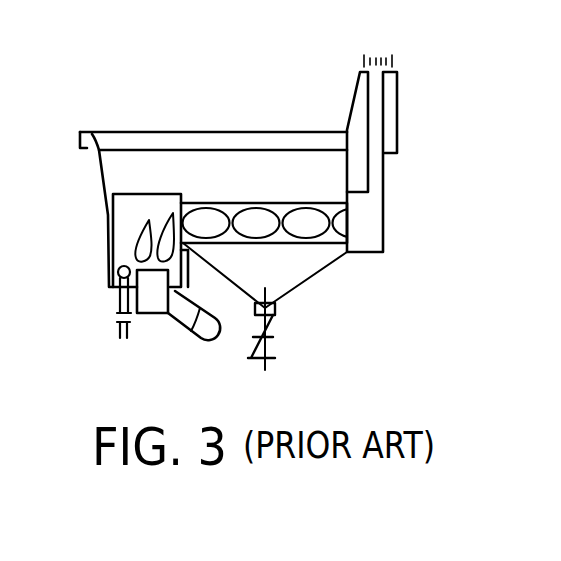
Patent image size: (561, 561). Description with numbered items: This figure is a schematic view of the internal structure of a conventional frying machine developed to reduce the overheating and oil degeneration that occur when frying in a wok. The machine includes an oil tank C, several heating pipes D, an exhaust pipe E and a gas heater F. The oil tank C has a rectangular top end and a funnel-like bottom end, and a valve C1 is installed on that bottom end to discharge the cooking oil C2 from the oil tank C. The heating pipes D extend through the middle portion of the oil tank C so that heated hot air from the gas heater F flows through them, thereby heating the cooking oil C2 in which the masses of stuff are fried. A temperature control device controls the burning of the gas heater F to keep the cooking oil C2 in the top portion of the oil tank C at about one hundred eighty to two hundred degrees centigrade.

The oil tank C is at (138, 125).
The cooking oil C2 is at (198, 153).
The exhaust pipe E is at (375, 138).
The heating pipes D is at (310, 223).
The valve C1 is at (266, 323).
The gas heater F is at (157, 323).